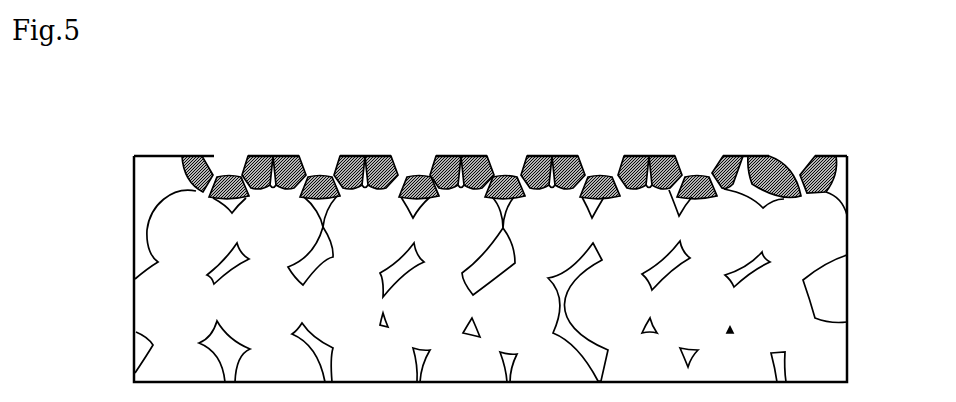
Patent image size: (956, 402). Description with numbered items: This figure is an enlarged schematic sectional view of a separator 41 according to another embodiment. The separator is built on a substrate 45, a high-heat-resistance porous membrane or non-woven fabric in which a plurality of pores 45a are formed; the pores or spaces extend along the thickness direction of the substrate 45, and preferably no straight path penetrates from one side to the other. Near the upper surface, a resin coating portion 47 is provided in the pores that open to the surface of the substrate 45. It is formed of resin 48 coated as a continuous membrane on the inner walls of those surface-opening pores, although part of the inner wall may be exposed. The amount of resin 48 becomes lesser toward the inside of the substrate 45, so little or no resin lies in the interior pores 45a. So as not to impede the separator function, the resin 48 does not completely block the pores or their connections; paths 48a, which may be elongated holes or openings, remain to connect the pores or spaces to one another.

The porous body (sound absorbing / electrode layer) 41 is at (821, 115).
The substrate 45 is at (835, 286).
The pores 45a is at (168, 222).
The resin coating portion 47 is at (524, 156).
The resin 48 is at (195, 155).
The paths 48a is at (238, 151).